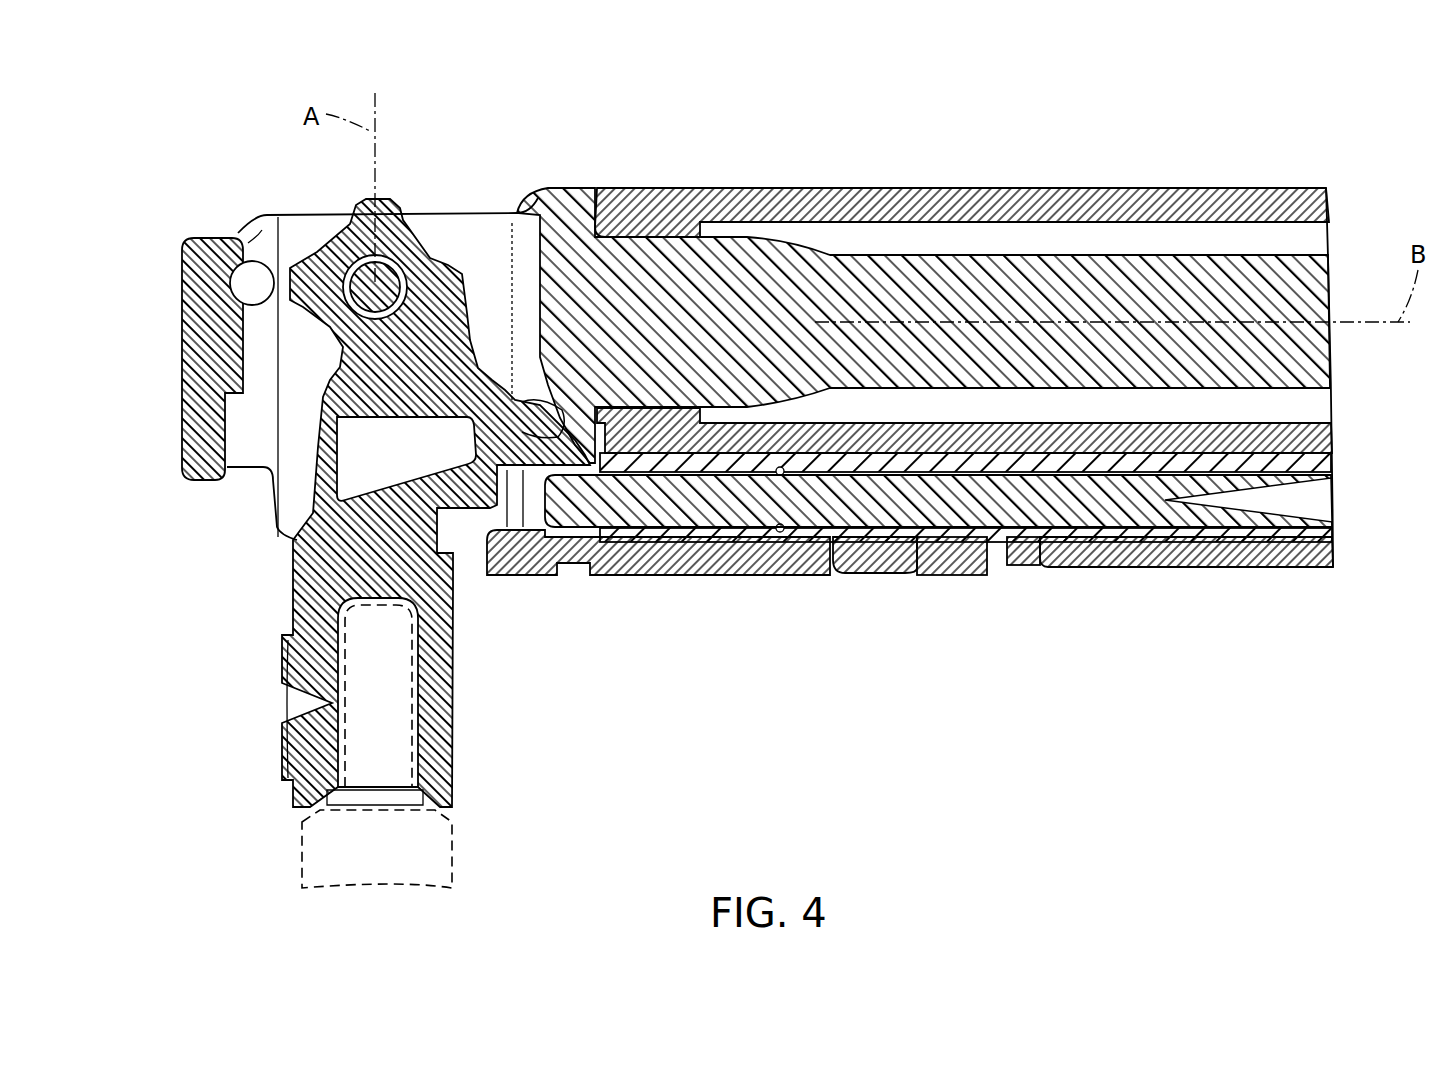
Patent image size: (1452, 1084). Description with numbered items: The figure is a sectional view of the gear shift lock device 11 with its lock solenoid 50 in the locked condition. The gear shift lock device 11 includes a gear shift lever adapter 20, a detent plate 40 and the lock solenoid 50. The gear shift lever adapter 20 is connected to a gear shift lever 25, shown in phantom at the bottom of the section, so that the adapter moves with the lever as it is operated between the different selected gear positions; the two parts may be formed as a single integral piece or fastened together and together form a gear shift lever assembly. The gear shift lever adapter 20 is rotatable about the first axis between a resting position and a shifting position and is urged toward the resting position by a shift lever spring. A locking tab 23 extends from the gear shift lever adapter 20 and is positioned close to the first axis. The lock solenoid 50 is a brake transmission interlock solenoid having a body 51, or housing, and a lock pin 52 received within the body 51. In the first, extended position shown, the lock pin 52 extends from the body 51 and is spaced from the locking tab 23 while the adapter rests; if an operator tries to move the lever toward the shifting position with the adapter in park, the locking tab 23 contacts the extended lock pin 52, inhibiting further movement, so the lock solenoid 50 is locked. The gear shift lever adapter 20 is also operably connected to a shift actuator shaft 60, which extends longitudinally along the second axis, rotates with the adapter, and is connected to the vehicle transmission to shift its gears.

The gear shift lock device 11 is at (183, 150).
The gear shift lever adapter 20 is at (284, 598).
The locking tab 23 is at (562, 433).
The gear shift lever 25 is at (455, 860).
The detent plate 40 is at (520, 548).
The lock solenoid 50 is at (1046, 574).
The body 51 is at (745, 532).
The lock pin 52 is at (628, 508).
The shift actuator shaft 60 is at (562, 176).